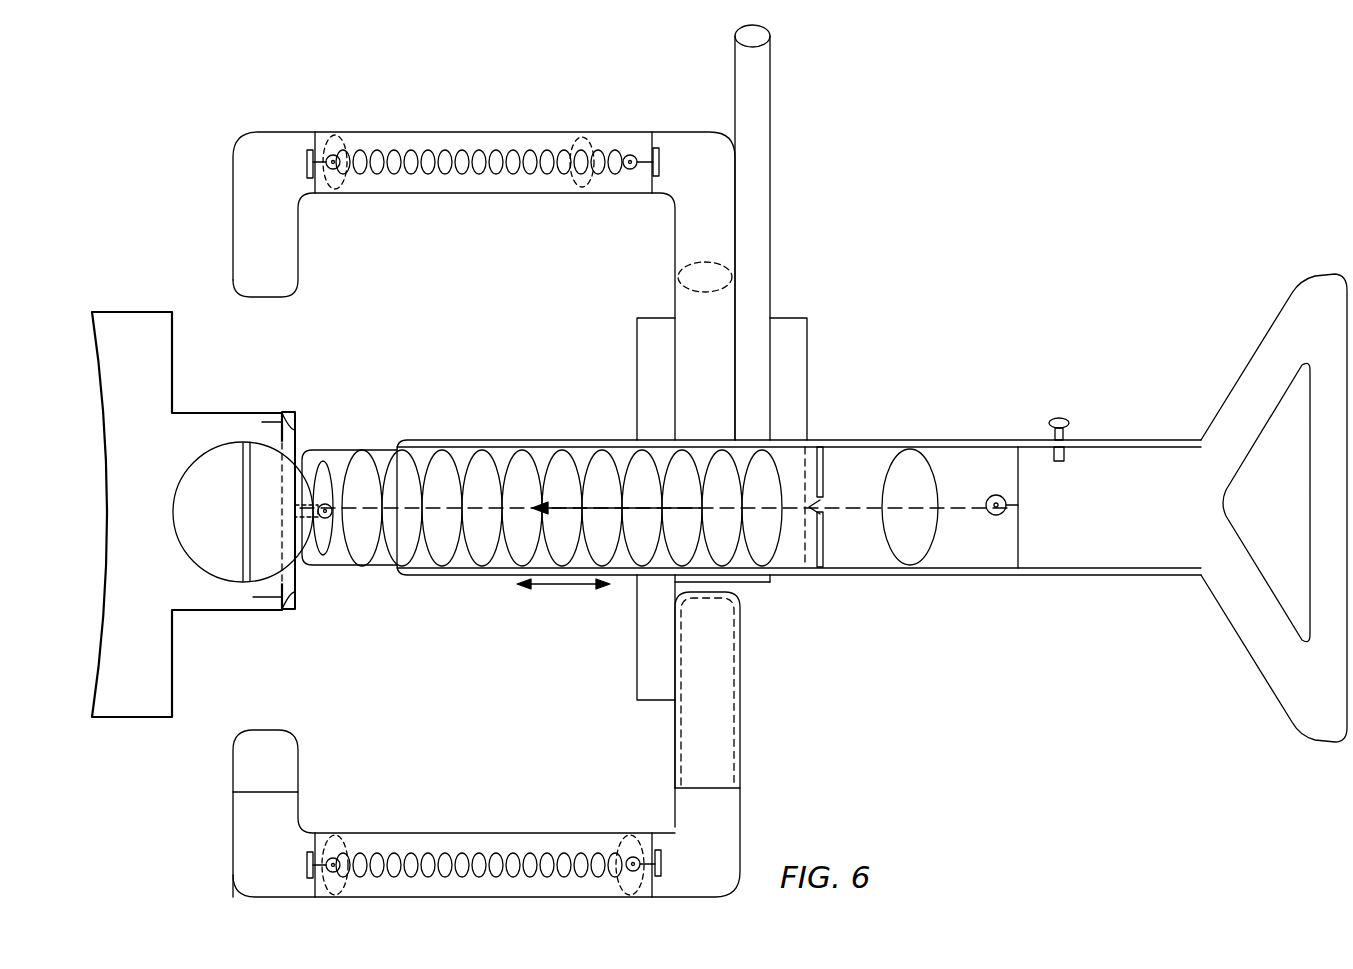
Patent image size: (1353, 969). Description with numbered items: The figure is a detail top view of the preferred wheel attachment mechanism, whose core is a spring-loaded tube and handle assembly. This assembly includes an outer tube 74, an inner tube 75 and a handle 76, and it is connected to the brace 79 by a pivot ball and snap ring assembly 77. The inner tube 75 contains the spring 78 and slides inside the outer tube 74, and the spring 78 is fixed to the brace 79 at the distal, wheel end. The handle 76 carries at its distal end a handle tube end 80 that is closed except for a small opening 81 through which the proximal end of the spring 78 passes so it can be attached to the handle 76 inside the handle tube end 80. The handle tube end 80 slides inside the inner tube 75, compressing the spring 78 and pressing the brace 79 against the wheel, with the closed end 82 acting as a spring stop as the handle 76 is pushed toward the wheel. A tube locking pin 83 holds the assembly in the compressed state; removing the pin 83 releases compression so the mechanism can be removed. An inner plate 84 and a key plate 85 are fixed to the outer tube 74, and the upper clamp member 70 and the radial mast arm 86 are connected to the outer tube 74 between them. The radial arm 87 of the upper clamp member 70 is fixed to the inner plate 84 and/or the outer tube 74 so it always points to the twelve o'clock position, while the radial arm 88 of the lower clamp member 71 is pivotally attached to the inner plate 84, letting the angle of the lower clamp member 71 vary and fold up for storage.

The upper clamp member 70 is at (420, 121).
The lower clamp member 71 is at (233, 846).
The outer tube 74 is at (518, 438).
The inner tube 75 is at (346, 570).
The handle 76 is at (1172, 540).
The pivot ball and snap ring assembly 77 is at (252, 482).
The spring 78 is at (483, 522).
The brace 79 is at (127, 322).
The handle tube end 80 is at (968, 535).
The small opening 81 is at (827, 507).
The closed end 82 is at (813, 553).
The tube locking pin 83 is at (1060, 418).
The inner plate 84 is at (652, 408).
The key plate 85 is at (783, 397).
The radial mast arm 86 is at (762, 246).
The radial arm 87 is at (683, 335).
The radial arm 88 is at (717, 757).